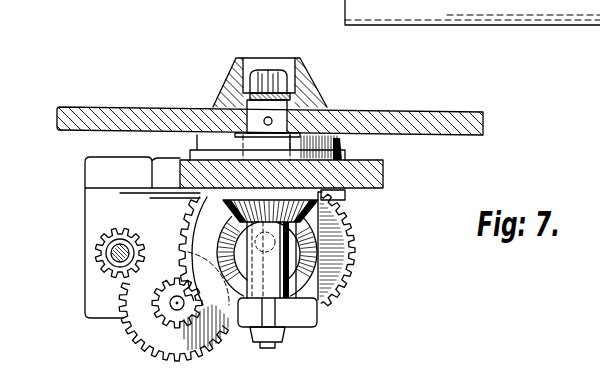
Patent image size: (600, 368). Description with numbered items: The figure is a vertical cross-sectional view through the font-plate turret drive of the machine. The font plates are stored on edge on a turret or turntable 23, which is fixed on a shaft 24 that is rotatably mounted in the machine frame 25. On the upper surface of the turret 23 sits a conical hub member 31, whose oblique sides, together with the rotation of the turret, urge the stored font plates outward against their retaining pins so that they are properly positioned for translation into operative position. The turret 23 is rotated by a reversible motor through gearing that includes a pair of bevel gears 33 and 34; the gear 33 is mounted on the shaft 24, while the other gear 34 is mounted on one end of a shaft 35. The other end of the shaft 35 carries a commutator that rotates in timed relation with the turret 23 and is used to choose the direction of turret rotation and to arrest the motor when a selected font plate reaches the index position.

The turret 23 is at (428, 135).
The shaft 24 is at (267, 69).
The machine frame 25 is at (95, 172).
The conical hub member 31 is at (310, 76).
The bevel gear 33 is at (221, 204).
The bevel gear 34 is at (356, 250).
The shaft 35 is at (229, 281).